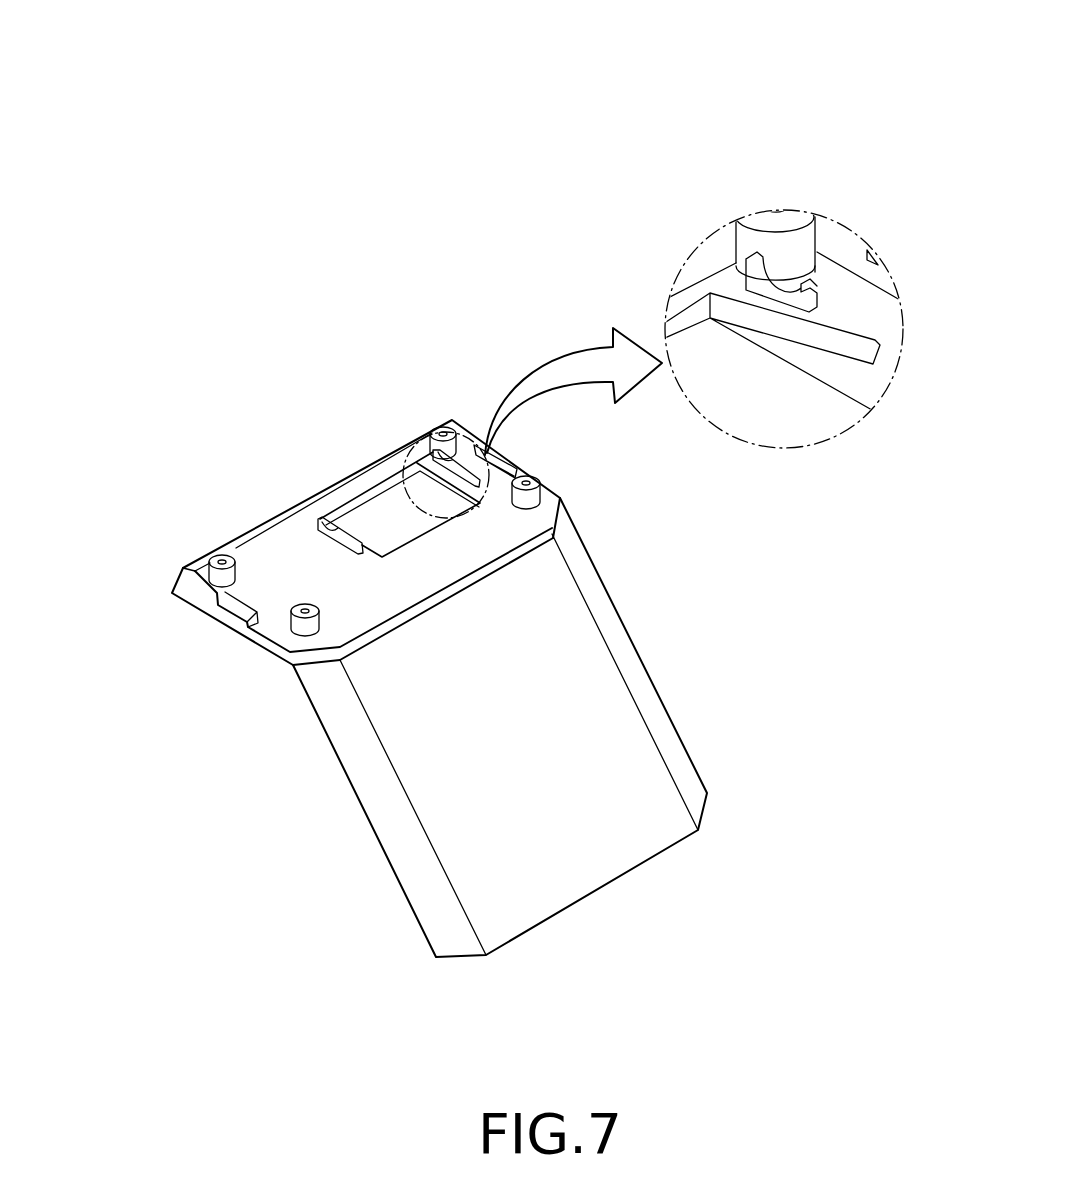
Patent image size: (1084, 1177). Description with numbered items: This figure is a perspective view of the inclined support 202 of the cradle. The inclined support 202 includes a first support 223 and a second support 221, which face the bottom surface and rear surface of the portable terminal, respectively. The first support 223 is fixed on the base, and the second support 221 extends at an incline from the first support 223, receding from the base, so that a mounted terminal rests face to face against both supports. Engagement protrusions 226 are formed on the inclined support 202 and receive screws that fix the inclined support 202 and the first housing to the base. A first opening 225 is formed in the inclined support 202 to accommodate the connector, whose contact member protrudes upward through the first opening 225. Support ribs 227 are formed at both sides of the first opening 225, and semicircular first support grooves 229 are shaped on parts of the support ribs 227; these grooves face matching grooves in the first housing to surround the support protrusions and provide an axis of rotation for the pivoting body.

The inclined support 202 is at (455, 42).
The second support 221 is at (603, 718).
The first support 223 is at (250, 600).
The first opening 225 is at (387, 507).
The engagement protrusions 226 is at (445, 432).
The support ribs 227 is at (330, 527).
The first support grooves 229 is at (775, 257).